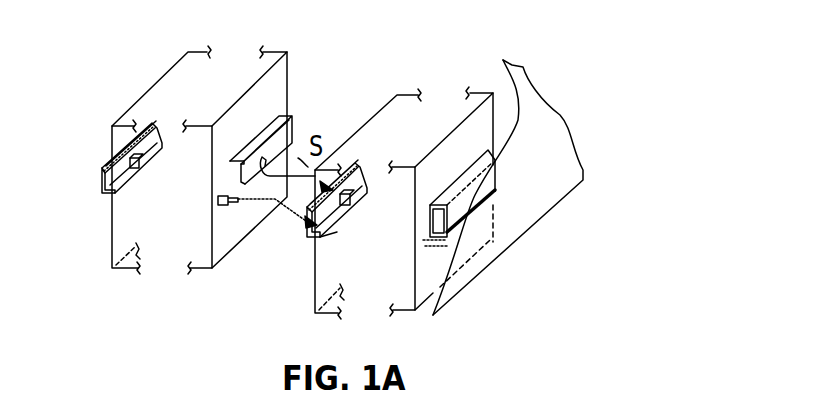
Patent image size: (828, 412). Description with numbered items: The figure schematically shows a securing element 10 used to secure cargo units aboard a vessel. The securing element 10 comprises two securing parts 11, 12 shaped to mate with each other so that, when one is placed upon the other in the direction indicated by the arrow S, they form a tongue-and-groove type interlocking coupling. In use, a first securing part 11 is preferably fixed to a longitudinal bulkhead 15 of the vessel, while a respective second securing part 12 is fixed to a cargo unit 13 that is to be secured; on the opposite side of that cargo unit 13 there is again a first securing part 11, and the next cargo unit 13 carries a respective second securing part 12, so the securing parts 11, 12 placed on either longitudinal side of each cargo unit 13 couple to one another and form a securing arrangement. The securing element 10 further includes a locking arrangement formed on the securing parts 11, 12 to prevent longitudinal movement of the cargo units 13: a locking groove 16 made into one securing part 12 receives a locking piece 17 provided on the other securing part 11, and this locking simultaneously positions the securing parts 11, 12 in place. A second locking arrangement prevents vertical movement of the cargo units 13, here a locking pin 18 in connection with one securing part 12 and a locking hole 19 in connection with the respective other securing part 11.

The securing element 10 is at (514, 187).
The first securing part 11 is at (105, 181).
The second securing part 12 is at (288, 134).
The cargo unit 13 is at (235, 60).
The longitudinal bulkhead 15 is at (540, 210).
The locking groove 16 is at (287, 153).
The locking piece 17 is at (140, 160).
The locking pin 18 is at (225, 205).
The locking hole 19 is at (337, 232).